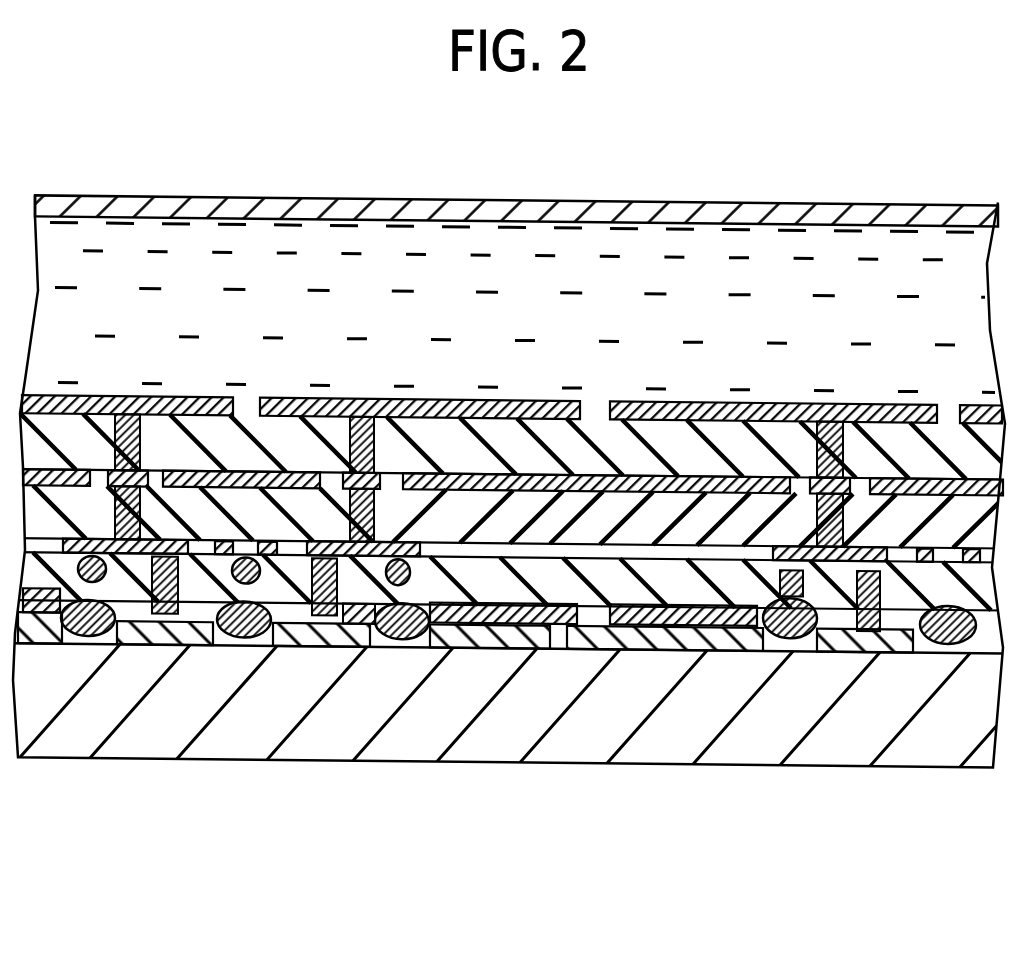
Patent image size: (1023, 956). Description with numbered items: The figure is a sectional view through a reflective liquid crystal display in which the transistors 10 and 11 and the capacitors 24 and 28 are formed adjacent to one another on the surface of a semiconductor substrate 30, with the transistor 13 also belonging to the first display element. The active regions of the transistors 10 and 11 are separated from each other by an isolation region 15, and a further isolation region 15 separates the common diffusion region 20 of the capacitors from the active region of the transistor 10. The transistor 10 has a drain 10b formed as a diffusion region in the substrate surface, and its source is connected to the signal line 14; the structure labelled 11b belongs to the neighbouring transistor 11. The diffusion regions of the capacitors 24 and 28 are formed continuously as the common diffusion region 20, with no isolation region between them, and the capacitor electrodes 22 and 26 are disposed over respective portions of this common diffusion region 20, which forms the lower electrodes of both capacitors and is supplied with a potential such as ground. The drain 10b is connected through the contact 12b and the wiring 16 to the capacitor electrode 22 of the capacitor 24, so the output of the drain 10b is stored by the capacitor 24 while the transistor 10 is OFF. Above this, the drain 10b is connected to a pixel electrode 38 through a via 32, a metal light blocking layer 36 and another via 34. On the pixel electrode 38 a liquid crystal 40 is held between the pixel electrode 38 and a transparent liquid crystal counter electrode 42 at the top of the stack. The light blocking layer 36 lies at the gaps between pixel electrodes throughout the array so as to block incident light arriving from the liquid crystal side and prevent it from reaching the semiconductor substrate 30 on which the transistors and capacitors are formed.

The transistor 10 is at (296, 668).
The drain 10b is at (325, 615).
The transistor 11 is at (137, 662).
The via conductor 11b is at (158, 614).
The contact 12b is at (347, 628).
The transistor 13 is at (856, 685).
The signal line 14 is at (190, 634).
The isolation region 15 is at (243, 637).
The wiring 16 is at (448, 636).
The common diffusion region 20 is at (540, 610).
The capacitor electrode 22 is at (502, 620).
The capacitor 24 is at (540, 590).
The capacitor electrode 26 is at (735, 618).
The capacitor 28 is at (637, 592).
The semiconductor substrate 30 is at (762, 710).
The via 32 is at (466, 505).
The via 34 is at (392, 470).
The light blocking layer 36 is at (686, 470).
The pixel electrode 38 is at (353, 405).
The liquid crystal 40 is at (590, 265).
The liquid crystal counter electrode 42 is at (215, 210).